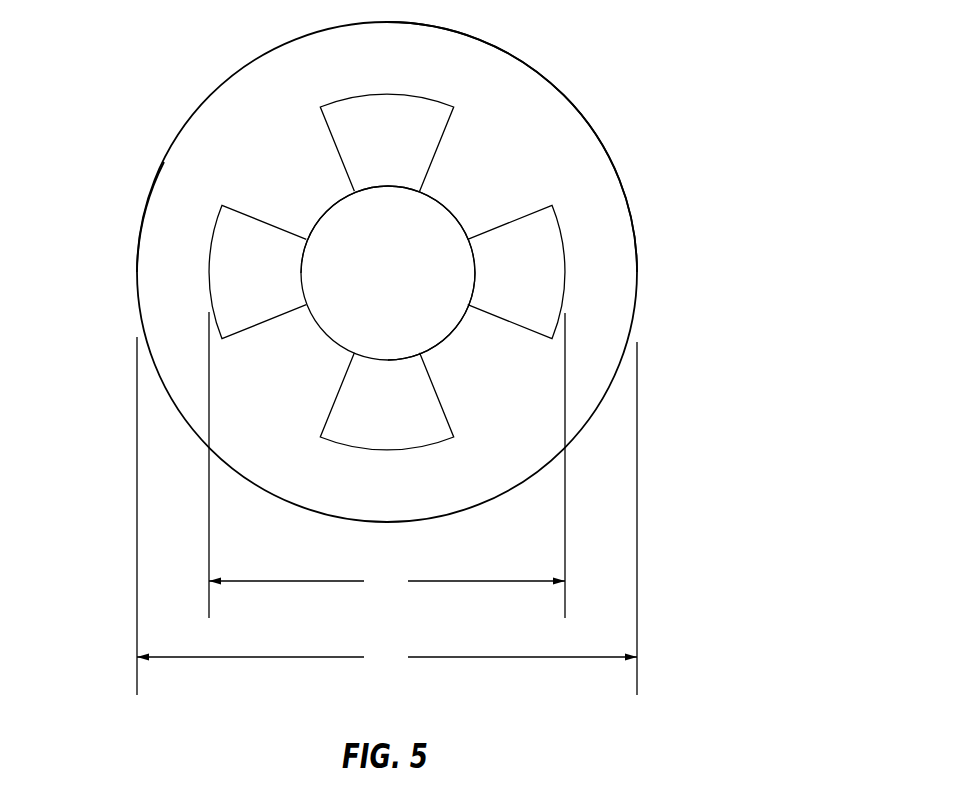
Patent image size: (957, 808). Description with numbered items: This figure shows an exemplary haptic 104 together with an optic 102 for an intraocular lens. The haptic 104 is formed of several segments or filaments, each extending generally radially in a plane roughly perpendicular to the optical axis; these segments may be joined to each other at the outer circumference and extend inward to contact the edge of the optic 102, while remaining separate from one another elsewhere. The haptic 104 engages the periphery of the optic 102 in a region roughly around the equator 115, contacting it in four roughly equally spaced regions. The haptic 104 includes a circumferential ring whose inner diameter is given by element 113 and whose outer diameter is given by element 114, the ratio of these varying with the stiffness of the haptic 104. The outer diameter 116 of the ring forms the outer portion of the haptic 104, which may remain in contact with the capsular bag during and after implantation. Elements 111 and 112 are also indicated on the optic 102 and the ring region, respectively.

The optic 102 is at (435, 240).
The haptic 104 is at (147, 303).
The rotor 111 is at (460, 272).
The annular region 112 is at (579, 147).
The inner diameter 113 is at (387, 465).
The outer diameter 114 is at (387, 516).
The equator 115 is at (323, 215).
The outer diameter of the ring 116 is at (140, 233).